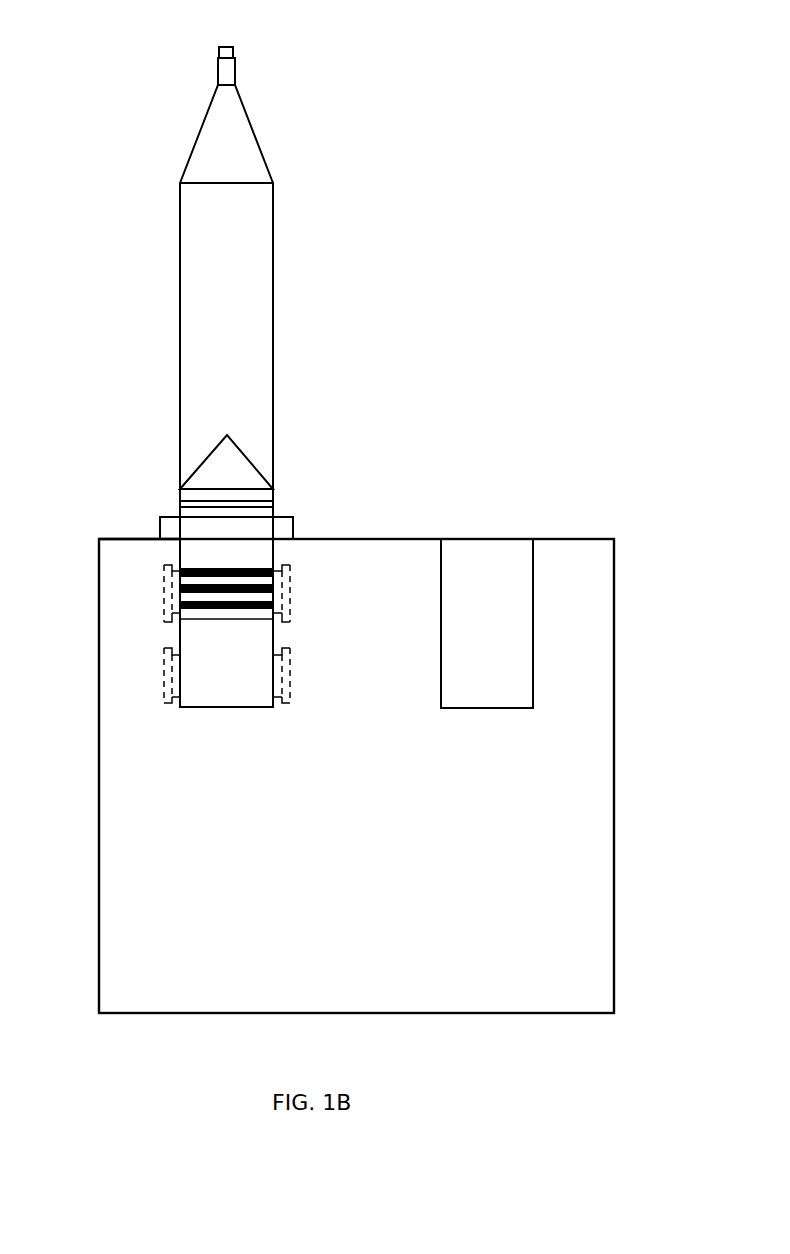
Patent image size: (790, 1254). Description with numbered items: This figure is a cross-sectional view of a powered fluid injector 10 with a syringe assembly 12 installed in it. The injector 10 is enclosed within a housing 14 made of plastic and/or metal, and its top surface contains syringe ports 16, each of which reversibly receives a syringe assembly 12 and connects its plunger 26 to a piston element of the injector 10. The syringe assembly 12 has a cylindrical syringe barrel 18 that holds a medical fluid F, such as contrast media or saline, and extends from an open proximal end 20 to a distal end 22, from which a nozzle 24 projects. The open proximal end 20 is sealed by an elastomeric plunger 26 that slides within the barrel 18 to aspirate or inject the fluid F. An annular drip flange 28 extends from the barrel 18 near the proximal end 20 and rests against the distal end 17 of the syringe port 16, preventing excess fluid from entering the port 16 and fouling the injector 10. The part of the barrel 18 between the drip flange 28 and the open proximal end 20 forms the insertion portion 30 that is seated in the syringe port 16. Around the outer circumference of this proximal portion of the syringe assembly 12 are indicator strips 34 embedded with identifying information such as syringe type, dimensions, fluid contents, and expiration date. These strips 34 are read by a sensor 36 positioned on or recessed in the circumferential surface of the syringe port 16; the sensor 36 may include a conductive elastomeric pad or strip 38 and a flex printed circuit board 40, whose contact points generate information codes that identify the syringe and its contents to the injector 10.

The fluid injector 10 is at (640, 528).
The syringe assembly 12 is at (229, 307).
The housing 14 is at (615, 733).
The syringe port 16 is at (504, 610).
The distal end of the syringe port 17 is at (168, 540).
The syringe barrel 18 is at (273, 242).
The open proximal end 20 is at (167, 617).
The distal end 22 is at (243, 138).
The nozzle 24 is at (230, 73).
The plunger 26 is at (242, 468).
The drip flange 28 is at (280, 530).
The insertion portion 30 is at (203, 553).
The indicator strip 34 is at (257, 568).
The sensor 36 is at (155, 587).
The conductive elastomeric pad or strip 38 is at (175, 695).
The flex printed circuit board 40 is at (170, 682).
The medical fluid F is at (203, 315).